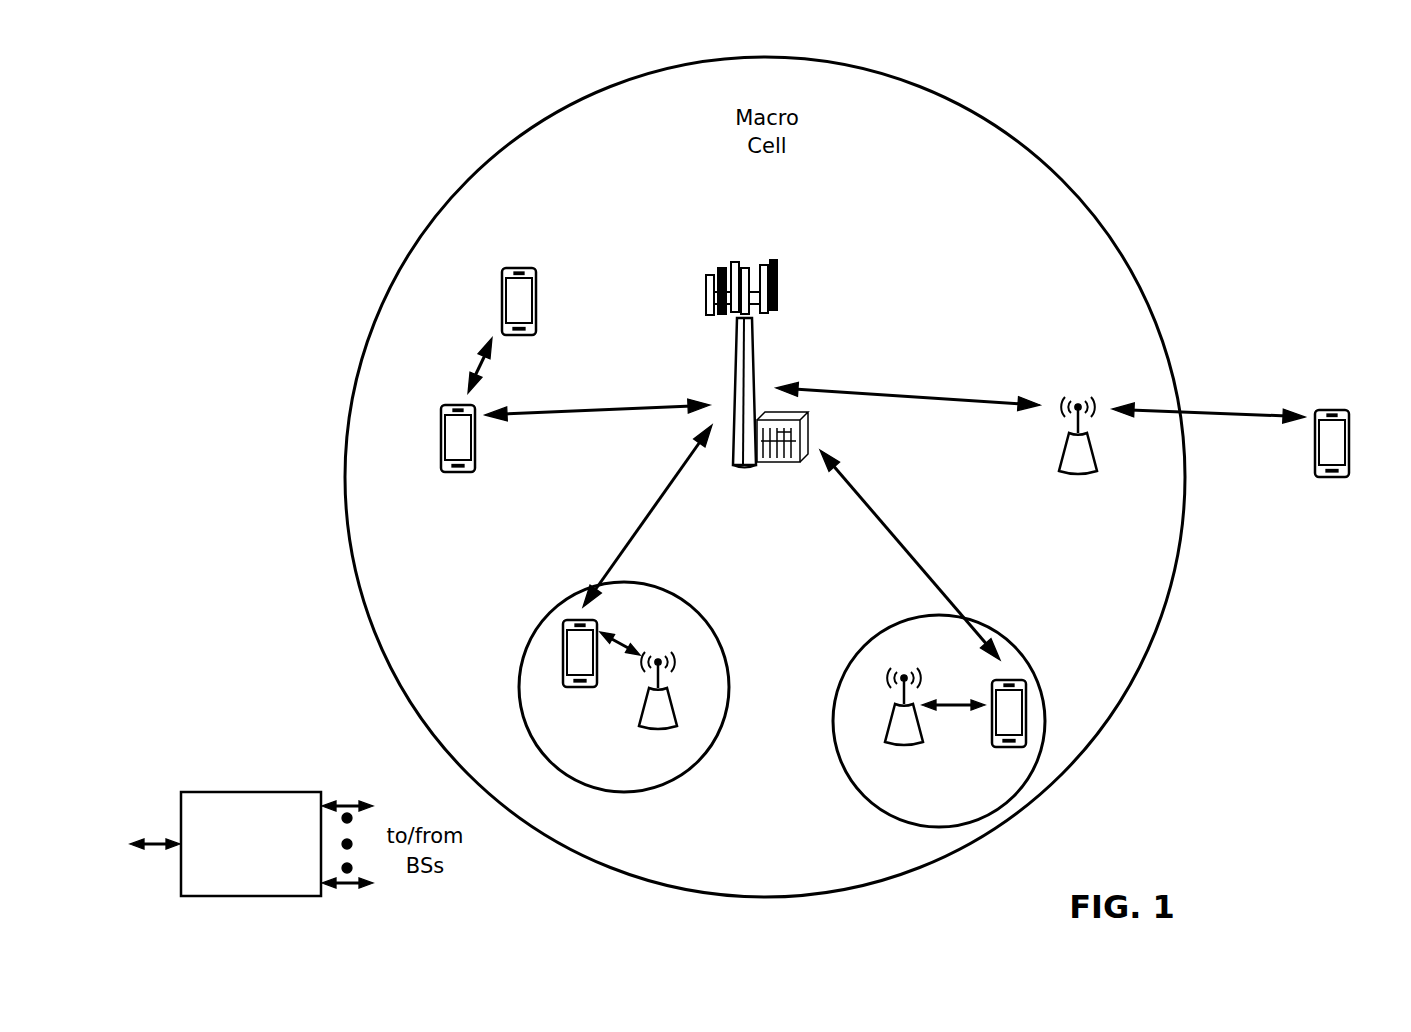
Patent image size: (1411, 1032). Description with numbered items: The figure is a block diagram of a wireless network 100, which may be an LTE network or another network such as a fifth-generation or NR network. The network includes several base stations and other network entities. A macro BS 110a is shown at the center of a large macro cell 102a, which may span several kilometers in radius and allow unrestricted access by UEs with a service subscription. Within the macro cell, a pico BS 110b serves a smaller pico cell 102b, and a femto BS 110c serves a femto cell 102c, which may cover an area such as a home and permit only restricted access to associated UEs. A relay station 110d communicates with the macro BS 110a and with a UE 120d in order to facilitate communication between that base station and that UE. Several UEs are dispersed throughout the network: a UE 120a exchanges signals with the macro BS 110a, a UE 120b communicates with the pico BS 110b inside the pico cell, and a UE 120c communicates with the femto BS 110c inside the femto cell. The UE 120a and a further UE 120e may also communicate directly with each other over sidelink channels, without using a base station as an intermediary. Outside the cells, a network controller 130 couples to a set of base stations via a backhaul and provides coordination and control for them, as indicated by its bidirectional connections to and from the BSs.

The wireless network 100 is at (238, 56).
The macro cell 102a is at (1040, 165).
The pico cell 102b is at (716, 630).
The femto cell 102c is at (876, 636).
The macro BS 110a is at (752, 262).
The pico BS 110b is at (673, 716).
The femto BS 110c is at (888, 733).
The relay station 110d is at (1079, 400).
The UE 120a is at (441, 443).
The UE 120b is at (569, 688).
The UE 120c is at (1000, 748).
The UE 120d is at (1342, 410).
The UE 120e is at (503, 290).
The network controller 130 is at (250, 792).